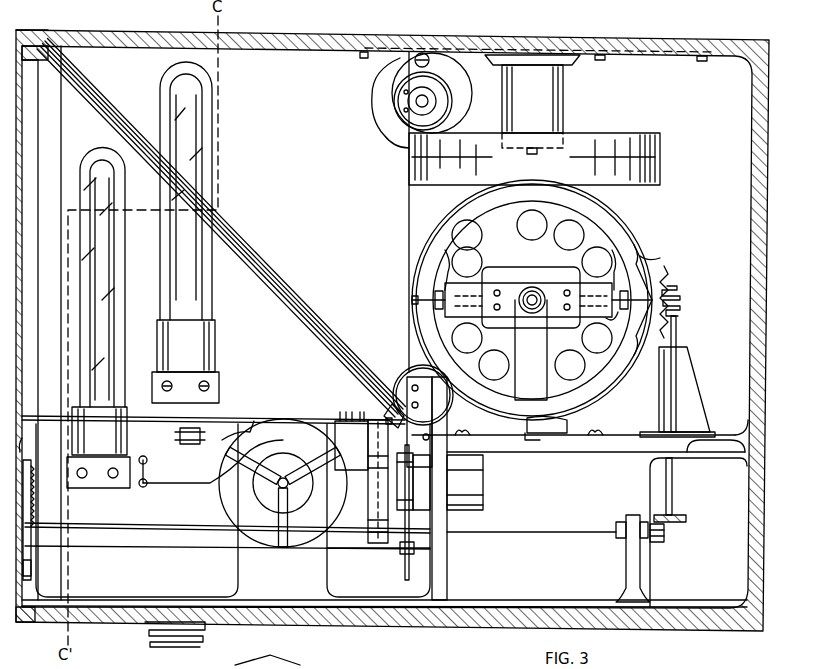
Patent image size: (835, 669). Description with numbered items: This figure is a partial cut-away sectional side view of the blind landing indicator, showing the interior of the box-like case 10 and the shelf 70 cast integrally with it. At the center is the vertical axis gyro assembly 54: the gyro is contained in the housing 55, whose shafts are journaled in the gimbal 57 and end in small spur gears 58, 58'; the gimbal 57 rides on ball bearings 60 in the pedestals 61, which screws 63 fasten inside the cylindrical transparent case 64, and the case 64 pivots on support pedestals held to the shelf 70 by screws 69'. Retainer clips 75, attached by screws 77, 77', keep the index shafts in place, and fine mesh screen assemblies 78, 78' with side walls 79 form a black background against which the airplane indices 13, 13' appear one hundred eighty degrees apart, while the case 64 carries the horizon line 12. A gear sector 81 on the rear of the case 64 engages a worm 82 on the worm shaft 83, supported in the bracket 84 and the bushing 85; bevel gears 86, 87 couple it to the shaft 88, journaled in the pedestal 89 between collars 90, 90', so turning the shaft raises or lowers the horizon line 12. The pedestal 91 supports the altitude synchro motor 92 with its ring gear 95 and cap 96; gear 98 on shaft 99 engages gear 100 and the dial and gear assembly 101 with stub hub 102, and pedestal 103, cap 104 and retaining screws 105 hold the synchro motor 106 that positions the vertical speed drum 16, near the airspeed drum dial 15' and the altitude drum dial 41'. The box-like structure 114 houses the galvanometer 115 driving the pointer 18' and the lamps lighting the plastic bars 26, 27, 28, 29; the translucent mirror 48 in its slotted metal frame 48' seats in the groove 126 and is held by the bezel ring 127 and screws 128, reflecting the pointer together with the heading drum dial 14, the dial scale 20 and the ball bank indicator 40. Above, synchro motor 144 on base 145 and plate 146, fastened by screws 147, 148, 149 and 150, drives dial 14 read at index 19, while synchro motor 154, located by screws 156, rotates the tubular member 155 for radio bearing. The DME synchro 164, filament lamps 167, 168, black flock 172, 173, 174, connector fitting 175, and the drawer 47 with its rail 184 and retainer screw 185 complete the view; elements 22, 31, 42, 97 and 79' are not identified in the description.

The box-like case 10 is at (760, 372).
The horizon line 12 is at (412, 298).
The airplane index 13 is at (515, 277).
The airplane index 13' is at (667, 249).
The heading drum dial 14 is at (448, 176).
The airspeed drum dial 15' is at (267, 659).
The vertical speed drum 16 is at (232, 504).
The pointer 18' is at (213, 408).
The index 19 is at (408, 196).
The dial scale 20 is at (404, 102).
The cross bar 22 is at (444, 302).
The plastic bar 26 is at (362, 412).
The plastic bar 27 is at (352, 412).
The plastic bar 28 is at (346, 412).
The plastic bar 29 is at (340, 412).
The bar 31 is at (436, 392).
The ball bank indicator 40 is at (542, 434).
The drum dial 41' is at (381, 410).
The disc 42 is at (379, 481).
The drawer 47 is at (560, 570).
The mirror 48 is at (223, 227).
The slotted metal frame 48' is at (216, 233).
The vertical axis gyro assembly 54 is at (638, 246).
The gyro housing 55 is at (512, 276).
The gimbal 57 is at (597, 337).
The spur gear 58 is at (465, 337).
The spur gear 58' is at (621, 323).
The ball bearing 60 is at (530, 312).
The pedestal 61 is at (538, 370).
The screw 63 is at (588, 436).
The cylindrical transparent case 64 is at (606, 392).
The screw 69' is at (541, 425).
The shelf 70 is at (556, 434).
The retainer clip 75 is at (443, 270).
The screw 77 is at (461, 259).
The screw 77' is at (595, 259).
The fine mesh screen assembly 78 is at (532, 300).
The fine mesh screen assembly 78' is at (632, 379).
The side wall 79 is at (542, 300).
The wheel disc 79' is at (631, 363).
The gear sector 81 is at (668, 272).
The worm 82 is at (681, 292).
The worm shaft 83 is at (678, 326).
The bracket 84 is at (690, 374).
The bushing 85 is at (684, 460).
The bevel gear 86 is at (676, 504).
The bevel gear 87 is at (664, 538).
The shaft 88 is at (146, 522).
The pedestal 89 is at (636, 516).
The collar 90 is at (611, 547).
The collar 90' is at (661, 547).
The pedestal 91 is at (447, 578).
The synchro motor 92 is at (476, 492).
The ring gear 95 is at (418, 543).
The cap 96 is at (432, 464).
The gear 97 is at (415, 481).
The gear 98 is at (405, 568).
The shaft 99 is at (376, 552).
The gear 100 is at (30, 564).
The dial and gear assembly 101 is at (30, 476).
The stub hub 102 is at (22, 444).
The pedestal 103 is at (246, 566).
The cap 104 is at (258, 484).
The retaining screw 105 is at (330, 436).
The synchro motor 106 is at (298, 488).
The box-like structure 114 is at (198, 480).
The galvanometer 115 is at (180, 434).
The groove 126 is at (408, 428).
The bezel ring 127 is at (48, 38).
The screw 128 is at (30, 40).
The synchro motor 144 is at (566, 98).
The base 145 is at (578, 62).
The plate 146 is at (535, 44).
The screw 147 is at (593, 46).
The screw 148 is at (466, 46).
The screw 149 is at (700, 50).
The screw 150 is at (362, 48).
The synchro motor 154 is at (460, 78).
The tubular member 155 is at (440, 98).
The screw 156 is at (420, 50).
The synchro 164 is at (404, 372).
The filament lamp 167 is at (100, 150).
The filament lamp 168 is at (172, 96).
The black flock 172 is at (152, 412).
The black flock 173 is at (406, 70).
The black flock 174 is at (408, 220).
The electrical connector fitting 175 is at (203, 640).
The rail 184 is at (364, 624).
The retainer screw 185 is at (16, 622).